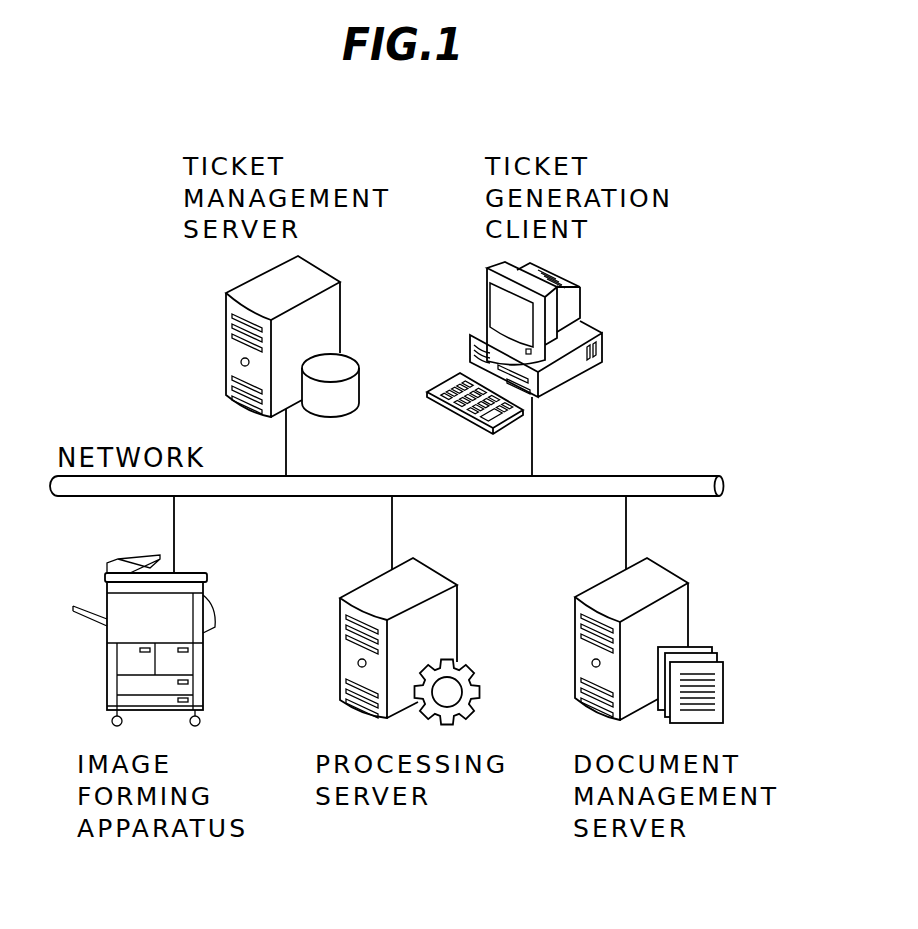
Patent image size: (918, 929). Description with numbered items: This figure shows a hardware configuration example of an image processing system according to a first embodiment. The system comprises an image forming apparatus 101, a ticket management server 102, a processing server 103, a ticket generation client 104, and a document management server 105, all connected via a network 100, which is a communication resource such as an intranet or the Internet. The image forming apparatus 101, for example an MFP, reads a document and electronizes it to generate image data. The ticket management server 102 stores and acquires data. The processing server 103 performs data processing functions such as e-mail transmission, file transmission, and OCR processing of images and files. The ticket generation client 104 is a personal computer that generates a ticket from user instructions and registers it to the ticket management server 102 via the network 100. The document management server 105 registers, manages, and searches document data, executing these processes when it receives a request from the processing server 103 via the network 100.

The network 100 is at (657, 475).
The image forming apparatus 101 is at (193, 568).
The ticket management server 102 is at (343, 317).
The processing server 103 is at (433, 572).
The ticket generation client 104 is at (602, 348).
The document management server 105 is at (667, 570).